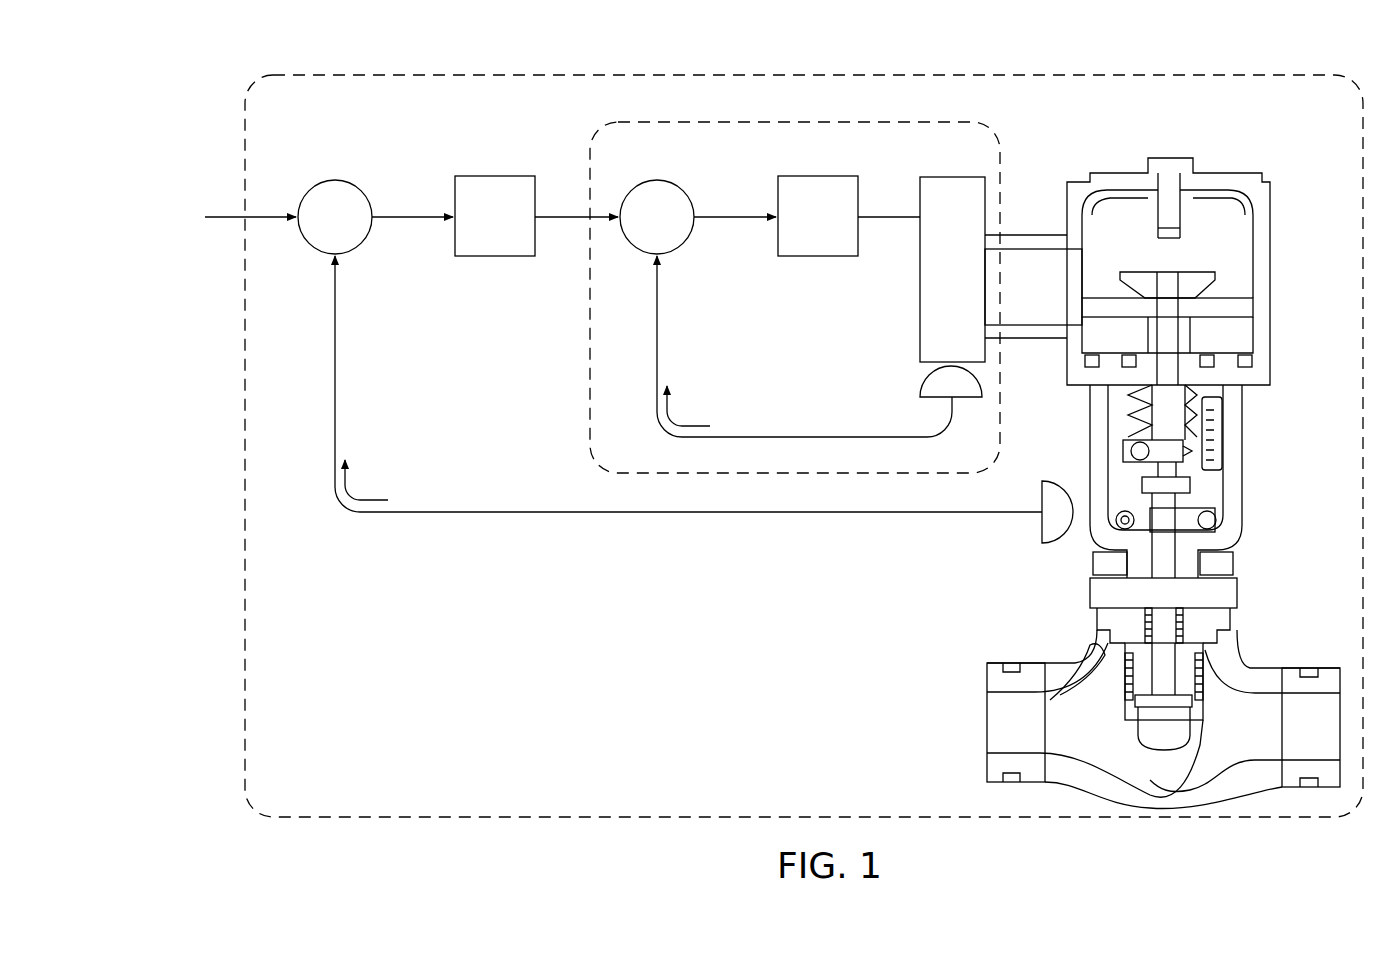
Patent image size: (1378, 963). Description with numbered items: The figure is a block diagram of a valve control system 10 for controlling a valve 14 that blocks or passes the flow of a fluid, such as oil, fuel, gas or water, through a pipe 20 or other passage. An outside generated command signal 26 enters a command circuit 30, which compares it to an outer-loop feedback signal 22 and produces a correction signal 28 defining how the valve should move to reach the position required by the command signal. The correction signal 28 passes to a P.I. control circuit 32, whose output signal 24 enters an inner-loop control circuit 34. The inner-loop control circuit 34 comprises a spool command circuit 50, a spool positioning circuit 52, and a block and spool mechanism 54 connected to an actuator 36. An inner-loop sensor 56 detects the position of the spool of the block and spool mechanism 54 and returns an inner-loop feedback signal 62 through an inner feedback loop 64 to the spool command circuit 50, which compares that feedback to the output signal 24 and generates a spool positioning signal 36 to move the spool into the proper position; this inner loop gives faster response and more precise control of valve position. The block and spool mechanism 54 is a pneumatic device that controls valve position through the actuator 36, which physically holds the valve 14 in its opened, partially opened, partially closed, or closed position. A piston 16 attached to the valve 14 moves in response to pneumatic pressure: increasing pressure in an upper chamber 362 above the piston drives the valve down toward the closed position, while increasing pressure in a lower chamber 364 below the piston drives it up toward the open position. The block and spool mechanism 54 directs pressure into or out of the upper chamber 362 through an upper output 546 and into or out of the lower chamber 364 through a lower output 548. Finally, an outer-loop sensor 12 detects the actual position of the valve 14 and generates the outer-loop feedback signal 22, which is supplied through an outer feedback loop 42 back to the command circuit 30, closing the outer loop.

The valve control system 10 is at (866, 75).
The outer-loop sensor 12 is at (1052, 481).
The valve 14 is at (1170, 727).
The piston 16 is at (1238, 306).
The pipe 20 is at (1240, 612).
The outer-loop feedback signal 22 is at (376, 500).
The output signal 24 is at (566, 216).
The command signal 26 is at (218, 216).
The correction signal 28 is at (402, 216).
The command circuit 30 is at (318, 232).
The P.I. control circuit 32 is at (478, 232).
The inner-loop control circuit 34 is at (772, 122).
The actuator 36 is at (728, 216).
The outer feedback loop 42 is at (972, 513).
The spool command circuit 50 is at (640, 232).
The spool positioning circuit 52 is at (801, 232).
The block and spool mechanism 54 is at (936, 282).
The inner-loop sensor 56 is at (922, 394).
The inner-loop feedback signal 62 is at (700, 426).
The inner feedback loop 64 is at (799, 437).
The upper chamber 362 is at (1222, 218).
The lower chamber 364 is at (1250, 346).
The upper output 546 is at (1028, 233).
The lower output 548 is at (1028, 324).